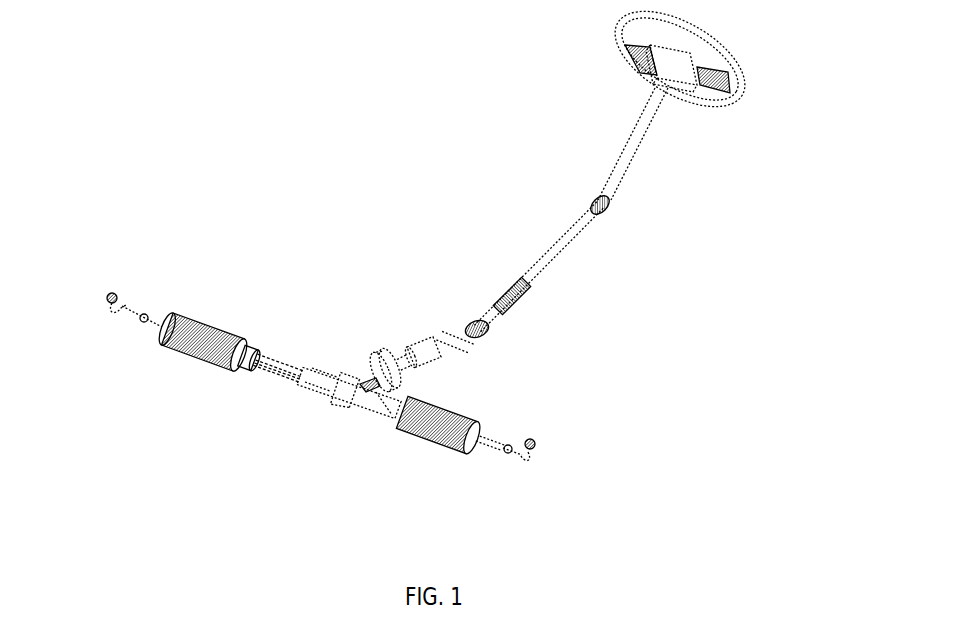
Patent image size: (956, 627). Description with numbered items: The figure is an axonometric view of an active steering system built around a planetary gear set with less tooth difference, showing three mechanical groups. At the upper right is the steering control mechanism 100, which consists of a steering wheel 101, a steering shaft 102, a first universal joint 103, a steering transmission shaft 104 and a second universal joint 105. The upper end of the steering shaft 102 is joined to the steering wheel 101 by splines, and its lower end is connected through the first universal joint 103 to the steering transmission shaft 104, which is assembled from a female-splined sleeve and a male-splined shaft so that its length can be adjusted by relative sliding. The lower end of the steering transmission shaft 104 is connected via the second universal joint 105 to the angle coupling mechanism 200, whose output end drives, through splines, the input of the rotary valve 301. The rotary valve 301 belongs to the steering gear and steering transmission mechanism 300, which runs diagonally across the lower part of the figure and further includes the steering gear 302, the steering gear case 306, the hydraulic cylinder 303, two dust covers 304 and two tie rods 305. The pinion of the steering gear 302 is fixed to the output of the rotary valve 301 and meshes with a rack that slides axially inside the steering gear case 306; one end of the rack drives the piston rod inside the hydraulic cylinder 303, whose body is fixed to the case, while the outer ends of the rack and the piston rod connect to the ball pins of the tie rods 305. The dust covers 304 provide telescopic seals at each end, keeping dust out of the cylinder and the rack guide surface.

The steering control mechanism 100 is at (812, 12).
The steering wheel 101 is at (722, 56).
The steering shaft 102 is at (640, 140).
The first universal joint 103 is at (608, 203).
The steering transmission shaft 104 is at (559, 250).
The second universal joint 105 is at (485, 325).
The angle coupling mechanism 200 is at (434, 348).
The steering gear and steering transmission mechanism 300 is at (22, 508).
The rotary valve 301 is at (396, 406).
The steering gear 302 is at (364, 390).
The hydraulic cylinder 303 is at (263, 373).
The dust cover 304 is at (198, 346).
The tie rod 305 is at (143, 328).
The steering gear case 306 is at (323, 393).